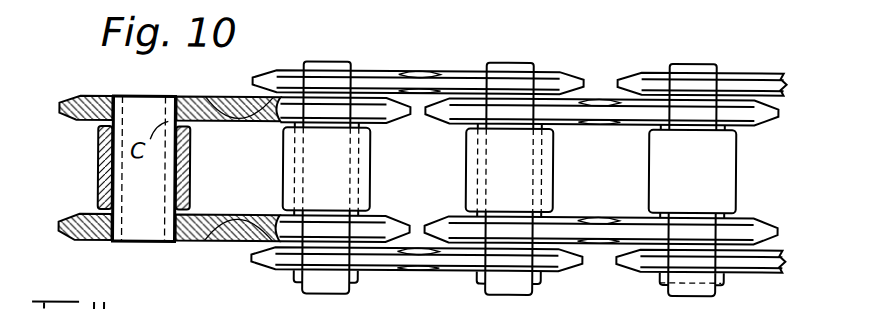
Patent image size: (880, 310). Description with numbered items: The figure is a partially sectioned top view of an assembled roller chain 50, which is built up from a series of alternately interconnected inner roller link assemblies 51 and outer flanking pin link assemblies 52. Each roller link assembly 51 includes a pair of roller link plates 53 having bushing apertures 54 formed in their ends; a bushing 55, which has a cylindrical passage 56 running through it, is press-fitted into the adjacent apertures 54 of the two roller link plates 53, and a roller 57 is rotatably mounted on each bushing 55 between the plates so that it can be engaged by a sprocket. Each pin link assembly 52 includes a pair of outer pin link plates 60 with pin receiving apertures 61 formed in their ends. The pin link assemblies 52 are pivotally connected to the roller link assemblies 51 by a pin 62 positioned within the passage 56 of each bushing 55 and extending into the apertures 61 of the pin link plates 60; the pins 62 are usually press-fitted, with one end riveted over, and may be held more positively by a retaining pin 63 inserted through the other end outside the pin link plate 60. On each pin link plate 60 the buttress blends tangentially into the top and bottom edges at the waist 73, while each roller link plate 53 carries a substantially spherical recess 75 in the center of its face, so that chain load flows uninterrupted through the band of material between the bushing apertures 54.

The chain 50 is at (740, 57).
The roller link assembly 51 is at (189, 96).
The pin link assembly 52 is at (434, 70).
The roller link plate 53 is at (80, 99).
The bushing aperture 54 is at (118, 105).
The bushing 55 is at (170, 155).
The cylindrical passage 56 is at (165, 217).
The roller 57 is at (103, 152).
The pin link plate 60 is at (784, 80).
The pin receiving aperture 61 is at (661, 282).
The pin 62 is at (683, 60).
The retaining pin 63 is at (713, 283).
The waist of the pin link plate 73 is at (416, 250).
The spherical recess 75 is at (237, 215).